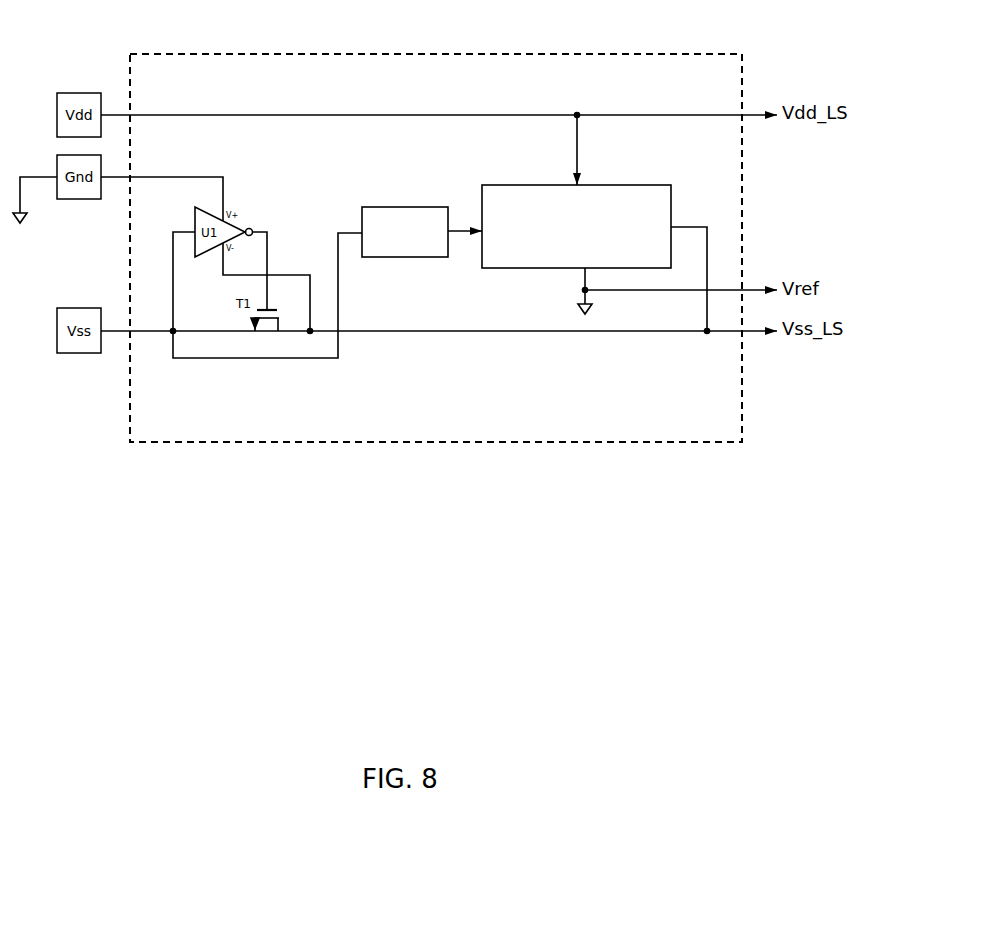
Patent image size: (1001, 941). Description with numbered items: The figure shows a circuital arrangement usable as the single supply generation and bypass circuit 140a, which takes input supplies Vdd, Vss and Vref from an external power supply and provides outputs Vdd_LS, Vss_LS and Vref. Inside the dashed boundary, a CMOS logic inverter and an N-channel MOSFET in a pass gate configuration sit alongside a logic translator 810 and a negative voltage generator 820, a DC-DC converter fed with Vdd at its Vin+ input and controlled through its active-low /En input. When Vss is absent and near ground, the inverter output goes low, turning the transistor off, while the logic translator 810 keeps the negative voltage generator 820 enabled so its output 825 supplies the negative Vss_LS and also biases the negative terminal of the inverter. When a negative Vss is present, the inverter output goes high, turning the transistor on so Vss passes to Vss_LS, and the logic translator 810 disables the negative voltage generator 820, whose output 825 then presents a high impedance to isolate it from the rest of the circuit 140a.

The single supply generation and bypass circuit 140a is at (428, 53).
The logic translator 810 is at (377, 207).
The negative voltage generator 820 is at (482, 190).
The output of the negative voltage generator 825 is at (678, 222).